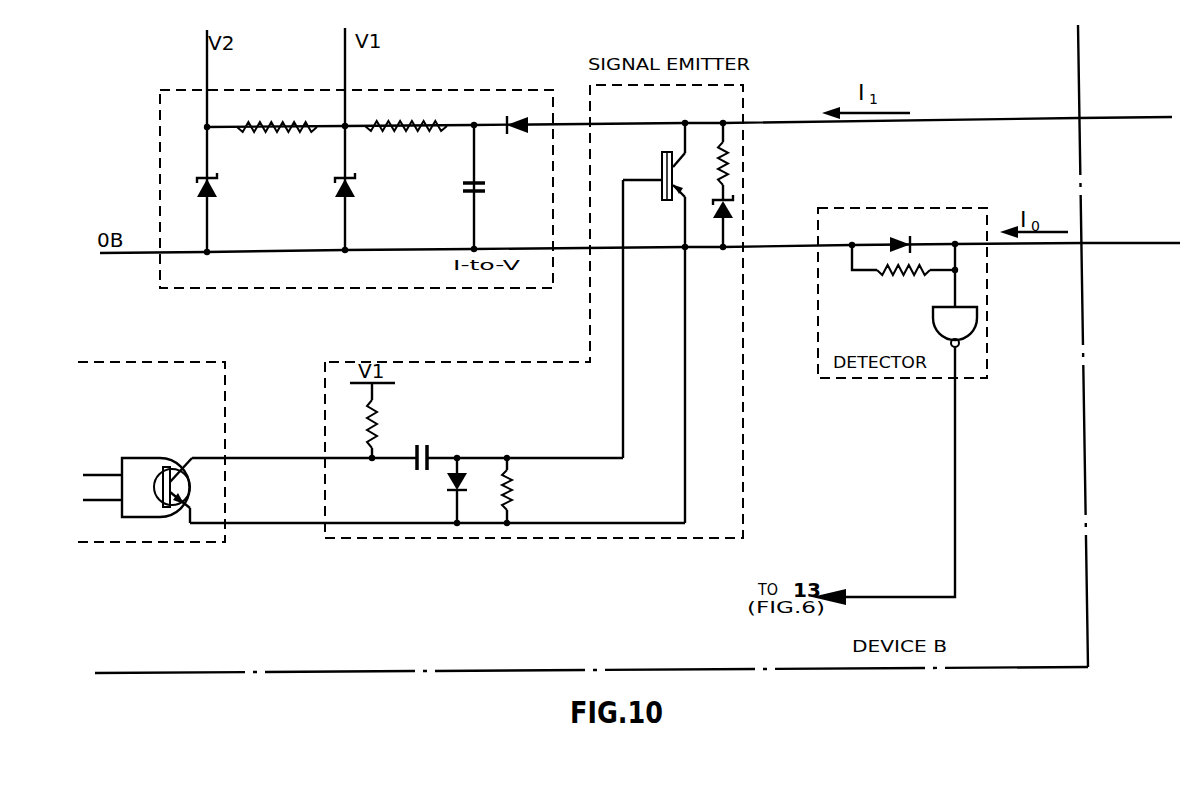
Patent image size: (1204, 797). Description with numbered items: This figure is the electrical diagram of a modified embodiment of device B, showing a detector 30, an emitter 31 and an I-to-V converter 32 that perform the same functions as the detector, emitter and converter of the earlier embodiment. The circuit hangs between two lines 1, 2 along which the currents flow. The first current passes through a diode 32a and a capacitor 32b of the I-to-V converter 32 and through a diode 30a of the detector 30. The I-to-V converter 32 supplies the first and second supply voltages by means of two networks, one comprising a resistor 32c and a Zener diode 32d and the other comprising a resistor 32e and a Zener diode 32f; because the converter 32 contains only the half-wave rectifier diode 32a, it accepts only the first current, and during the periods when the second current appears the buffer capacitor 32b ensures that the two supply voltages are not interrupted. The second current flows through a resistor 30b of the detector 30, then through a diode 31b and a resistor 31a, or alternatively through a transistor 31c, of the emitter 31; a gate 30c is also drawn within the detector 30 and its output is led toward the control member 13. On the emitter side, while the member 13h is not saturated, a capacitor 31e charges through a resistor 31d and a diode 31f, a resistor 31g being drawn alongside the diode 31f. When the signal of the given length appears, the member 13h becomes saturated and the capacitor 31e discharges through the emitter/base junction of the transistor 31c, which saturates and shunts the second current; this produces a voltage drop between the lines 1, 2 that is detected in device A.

The line 1 is at (1133, 118).
The line 2 is at (1102, 242).
The control circuit member 13 is at (137, 533).
The member 13h is at (145, 475).
The detector 30 is at (982, 278).
The diode 30a is at (912, 242).
The resistor 30b is at (898, 276).
The gate 30c is at (978, 330).
The emitter 31 is at (562, 547).
The resistor 31a is at (737, 152).
The diode 31b is at (740, 186).
The transistor 31c is at (691, 160).
The resistor 31d is at (380, 405).
The capacitor 31e is at (430, 445).
The diode 31f is at (452, 483).
The resistor 31g is at (515, 492).
The I-to-V converter 32 is at (291, 277).
The diode 32a is at (518, 118).
The capacitor 32b is at (482, 191).
The resistor 32c is at (410, 120).
The Zener diode 32d is at (352, 188).
The resistor 32e is at (273, 120).
The Zener diode 32f is at (212, 189).